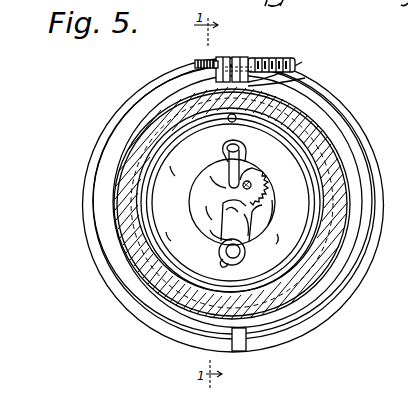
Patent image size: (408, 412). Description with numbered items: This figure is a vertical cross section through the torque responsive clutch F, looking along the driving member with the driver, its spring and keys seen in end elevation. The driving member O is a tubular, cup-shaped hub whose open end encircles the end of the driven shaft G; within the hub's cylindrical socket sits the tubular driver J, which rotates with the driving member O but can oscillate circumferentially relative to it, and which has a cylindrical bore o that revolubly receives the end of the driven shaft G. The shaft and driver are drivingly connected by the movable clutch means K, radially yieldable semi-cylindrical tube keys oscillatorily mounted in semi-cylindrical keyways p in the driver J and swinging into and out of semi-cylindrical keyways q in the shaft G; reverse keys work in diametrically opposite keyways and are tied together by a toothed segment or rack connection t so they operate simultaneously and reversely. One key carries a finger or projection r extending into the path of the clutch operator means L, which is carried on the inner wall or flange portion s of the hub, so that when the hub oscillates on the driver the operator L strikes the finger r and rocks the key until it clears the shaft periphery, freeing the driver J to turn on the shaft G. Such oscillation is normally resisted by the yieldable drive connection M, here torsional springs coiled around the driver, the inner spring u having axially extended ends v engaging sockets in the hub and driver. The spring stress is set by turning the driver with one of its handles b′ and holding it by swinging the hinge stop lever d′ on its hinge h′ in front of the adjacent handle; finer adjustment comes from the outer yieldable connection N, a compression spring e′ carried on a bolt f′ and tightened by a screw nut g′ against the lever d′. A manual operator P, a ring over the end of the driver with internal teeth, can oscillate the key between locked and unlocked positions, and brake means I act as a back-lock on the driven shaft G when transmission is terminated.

The driving member O is at (333, 163).
The axially extended ends v is at (177, 93).
The brake means I is at (352, 121).
The torque responsive clutch F is at (318, 125).
The movable clutch means K is at (215, 153).
The driver member J is at (188, 192).
The inner wall or flange portion s is at (276, 204).
The driven shaft G is at (200, 209).
The inner spring u is at (155, 170).
The finger or projection r is at (224, 180).
The yieldable drive connection M is at (156, 228).
The cylindrical bore o is at (268, 240).
The semi-cylindrical keyways q is at (222, 240).
The manual operator P is at (246, 160).
The toothed segment or rack connection t is at (241, 195).
The clutch operator means L is at (249, 185).
The semi-cylindrical keyways p is at (252, 259).
The outer yieldable connection N is at (300, 60).
The hinge h′ is at (304, 81).
The compression spring e′ is at (272, 58).
The screw nut g′ is at (224, 59).
The hinge stop lever d′ is at (244, 58).
The bolt f′ is at (196, 63).
The handles b′ is at (217, 59).